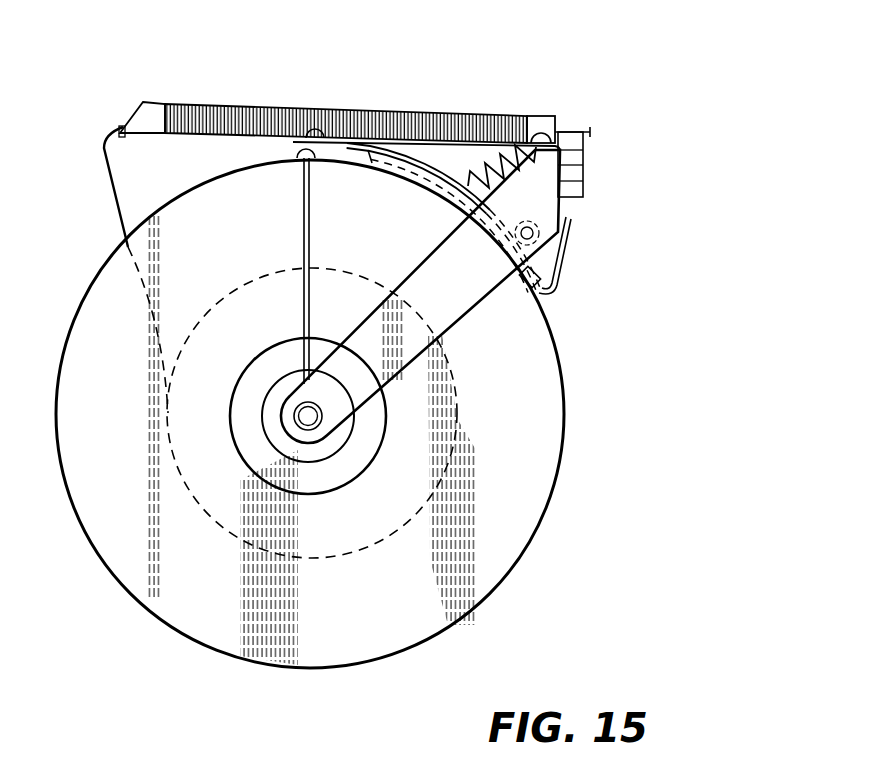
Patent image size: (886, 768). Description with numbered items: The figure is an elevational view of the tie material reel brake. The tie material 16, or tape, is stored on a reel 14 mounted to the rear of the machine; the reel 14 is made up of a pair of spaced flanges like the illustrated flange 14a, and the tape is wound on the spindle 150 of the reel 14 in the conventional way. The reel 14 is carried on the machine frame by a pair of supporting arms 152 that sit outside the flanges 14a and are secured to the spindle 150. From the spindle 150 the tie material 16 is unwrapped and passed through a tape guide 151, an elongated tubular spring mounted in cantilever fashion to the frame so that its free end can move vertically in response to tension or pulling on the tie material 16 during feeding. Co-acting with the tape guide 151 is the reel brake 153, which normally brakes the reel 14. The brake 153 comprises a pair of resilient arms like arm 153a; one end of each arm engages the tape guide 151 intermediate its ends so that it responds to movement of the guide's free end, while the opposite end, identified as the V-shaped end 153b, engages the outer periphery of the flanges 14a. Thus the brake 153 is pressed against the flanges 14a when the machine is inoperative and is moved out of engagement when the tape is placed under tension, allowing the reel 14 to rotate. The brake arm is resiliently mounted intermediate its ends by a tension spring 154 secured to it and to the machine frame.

The reel 14 is at (88, 562).
The flange 14a is at (490, 550).
The tie material 16 is at (110, 176).
The spindle 150 is at (264, 380).
The tape guide 151 is at (232, 103).
The supporting arm 152 is at (466, 301).
The reel brake 153 is at (567, 277).
The resilient arm 153a is at (374, 166).
The V-shaped end of brake arm 153b is at (547, 293).
The tension spring 154 is at (488, 143).